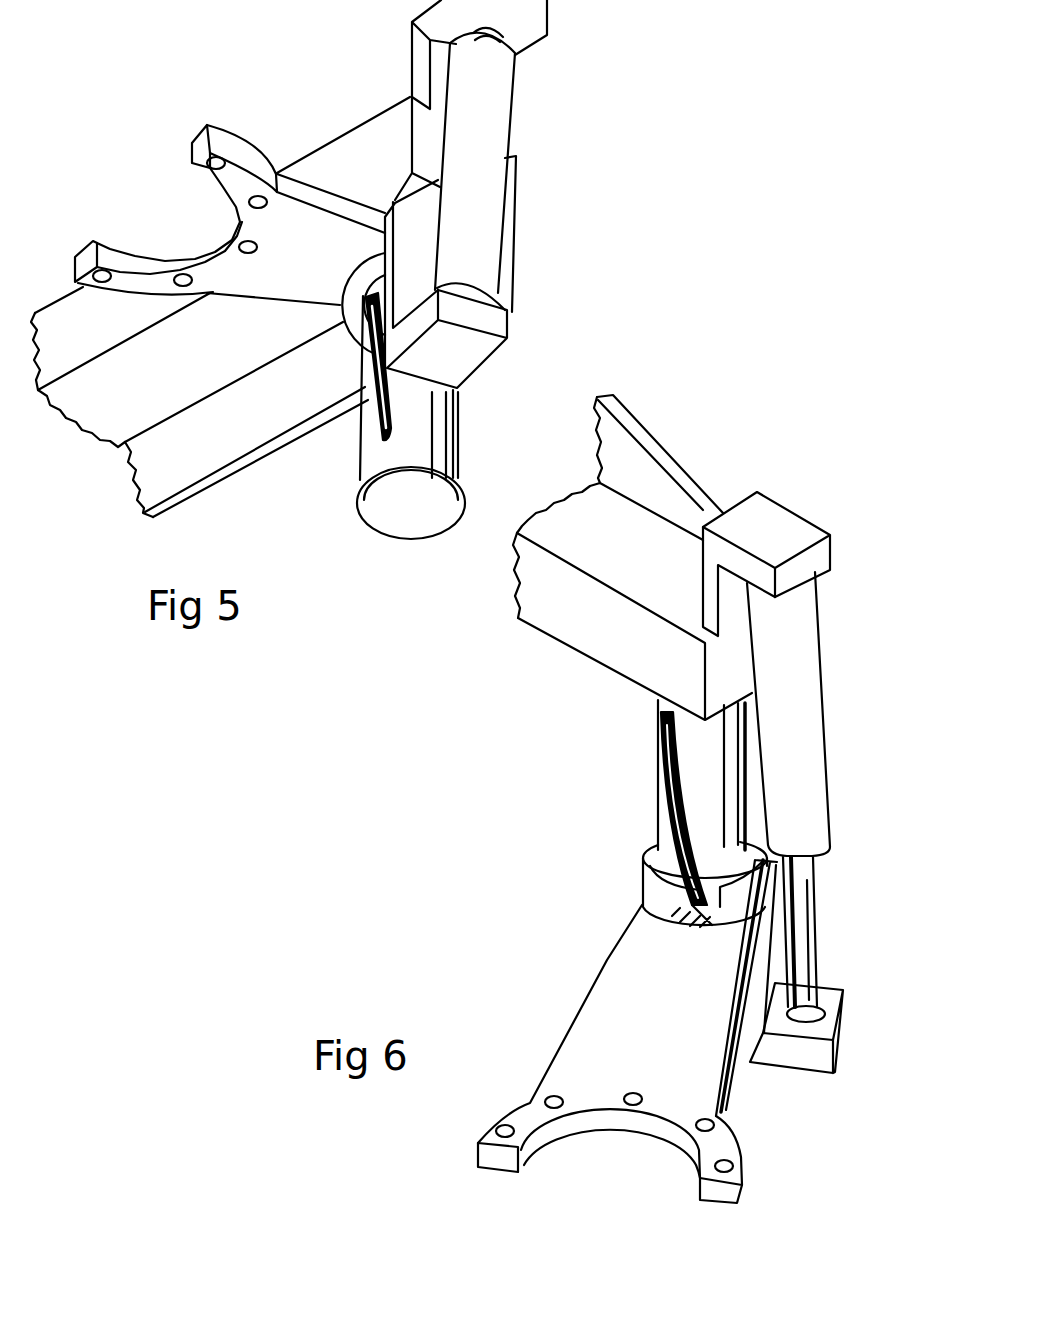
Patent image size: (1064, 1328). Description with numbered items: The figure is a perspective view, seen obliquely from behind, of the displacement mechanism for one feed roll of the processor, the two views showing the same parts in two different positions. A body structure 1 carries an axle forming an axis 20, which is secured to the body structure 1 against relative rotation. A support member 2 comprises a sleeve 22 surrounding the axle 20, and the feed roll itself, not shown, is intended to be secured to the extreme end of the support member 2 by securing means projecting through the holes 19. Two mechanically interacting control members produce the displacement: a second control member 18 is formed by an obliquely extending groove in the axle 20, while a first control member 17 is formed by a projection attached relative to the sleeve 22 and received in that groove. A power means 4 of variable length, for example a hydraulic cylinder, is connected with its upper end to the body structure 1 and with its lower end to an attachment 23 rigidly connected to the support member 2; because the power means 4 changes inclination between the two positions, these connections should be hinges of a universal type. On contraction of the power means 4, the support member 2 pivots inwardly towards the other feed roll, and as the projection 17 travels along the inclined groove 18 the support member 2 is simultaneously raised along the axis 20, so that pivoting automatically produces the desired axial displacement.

The body structure 1 is at (690, 468).
The support member 2 is at (703, 1075).
The power means 4 is at (790, 680).
The first control member 17 is at (694, 922).
The second control member 18 is at (658, 778).
The holes 19 is at (556, 1100).
The axis 20 is at (697, 747).
The sleeve 22 is at (655, 896).
The attachment 23 is at (810, 1060).